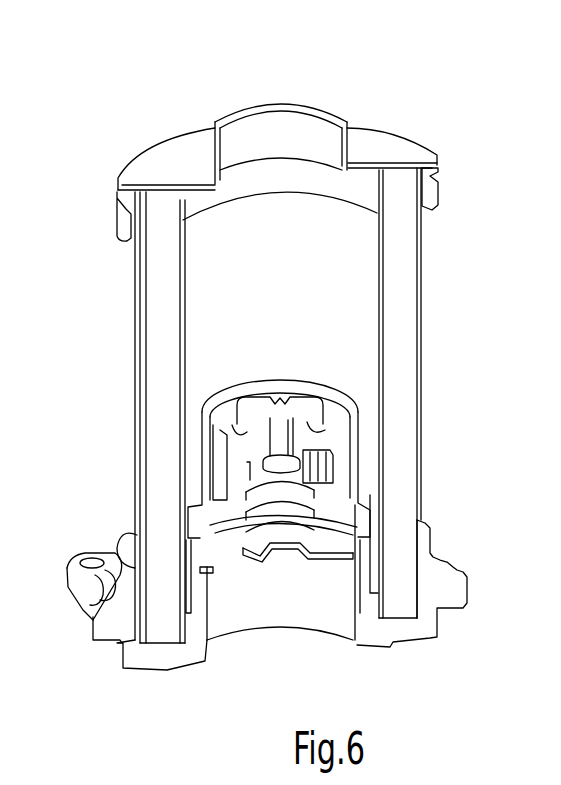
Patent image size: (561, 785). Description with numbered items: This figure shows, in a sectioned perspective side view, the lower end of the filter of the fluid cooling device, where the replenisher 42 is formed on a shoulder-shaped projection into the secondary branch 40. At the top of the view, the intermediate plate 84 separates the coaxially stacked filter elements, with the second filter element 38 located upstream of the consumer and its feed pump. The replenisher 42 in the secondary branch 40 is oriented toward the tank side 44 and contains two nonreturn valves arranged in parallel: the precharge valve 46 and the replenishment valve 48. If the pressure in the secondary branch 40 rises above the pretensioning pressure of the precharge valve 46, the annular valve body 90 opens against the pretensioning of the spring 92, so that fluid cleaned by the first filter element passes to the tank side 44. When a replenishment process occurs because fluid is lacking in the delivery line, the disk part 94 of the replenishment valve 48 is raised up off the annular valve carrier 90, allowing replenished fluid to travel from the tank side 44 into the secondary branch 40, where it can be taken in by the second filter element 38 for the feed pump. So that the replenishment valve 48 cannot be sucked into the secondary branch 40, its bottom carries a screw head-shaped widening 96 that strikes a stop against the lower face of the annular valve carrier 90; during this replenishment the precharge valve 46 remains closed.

The intermediate plate 84 is at (365, 145).
The second filter element 38 is at (403, 280).
The secondary branch 40 is at (295, 282).
The disk part 94 is at (257, 405).
The precharge valve 46 is at (307, 437).
The replenishment valve 48 is at (285, 448).
The annular valve body 90 is at (250, 442).
The screw head-shaped widening 96 is at (300, 495).
The spring 92 is at (278, 522).
The tank side 44 is at (305, 602).
The replenisher 42 is at (438, 596).